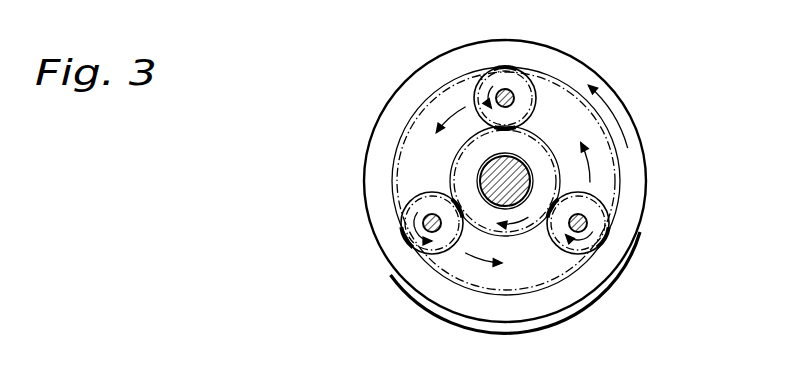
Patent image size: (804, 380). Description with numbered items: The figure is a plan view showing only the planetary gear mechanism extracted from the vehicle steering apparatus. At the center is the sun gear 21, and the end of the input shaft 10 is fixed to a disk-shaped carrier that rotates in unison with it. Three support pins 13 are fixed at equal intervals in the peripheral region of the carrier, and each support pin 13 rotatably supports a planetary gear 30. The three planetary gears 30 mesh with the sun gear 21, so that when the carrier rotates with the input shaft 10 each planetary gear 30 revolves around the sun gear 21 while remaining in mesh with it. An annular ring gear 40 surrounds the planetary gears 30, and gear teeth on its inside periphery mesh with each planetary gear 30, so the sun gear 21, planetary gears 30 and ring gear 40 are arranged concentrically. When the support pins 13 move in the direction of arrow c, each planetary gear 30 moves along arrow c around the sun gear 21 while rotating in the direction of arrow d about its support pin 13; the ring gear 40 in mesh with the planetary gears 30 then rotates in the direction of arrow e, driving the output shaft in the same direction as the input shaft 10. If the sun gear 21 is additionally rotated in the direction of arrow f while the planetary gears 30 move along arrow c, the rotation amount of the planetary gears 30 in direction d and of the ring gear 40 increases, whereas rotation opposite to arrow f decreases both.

The input shaft 10 is at (498, 178).
The support pin 13 is at (514, 93).
The sun gear 21 is at (538, 150).
The planetary gear 30 is at (517, 67).
The ring gear 40 is at (637, 117).
The arrow c is at (462, 108).
The arrow d is at (482, 80).
The arrow e is at (613, 108).
The arrow f is at (529, 219).